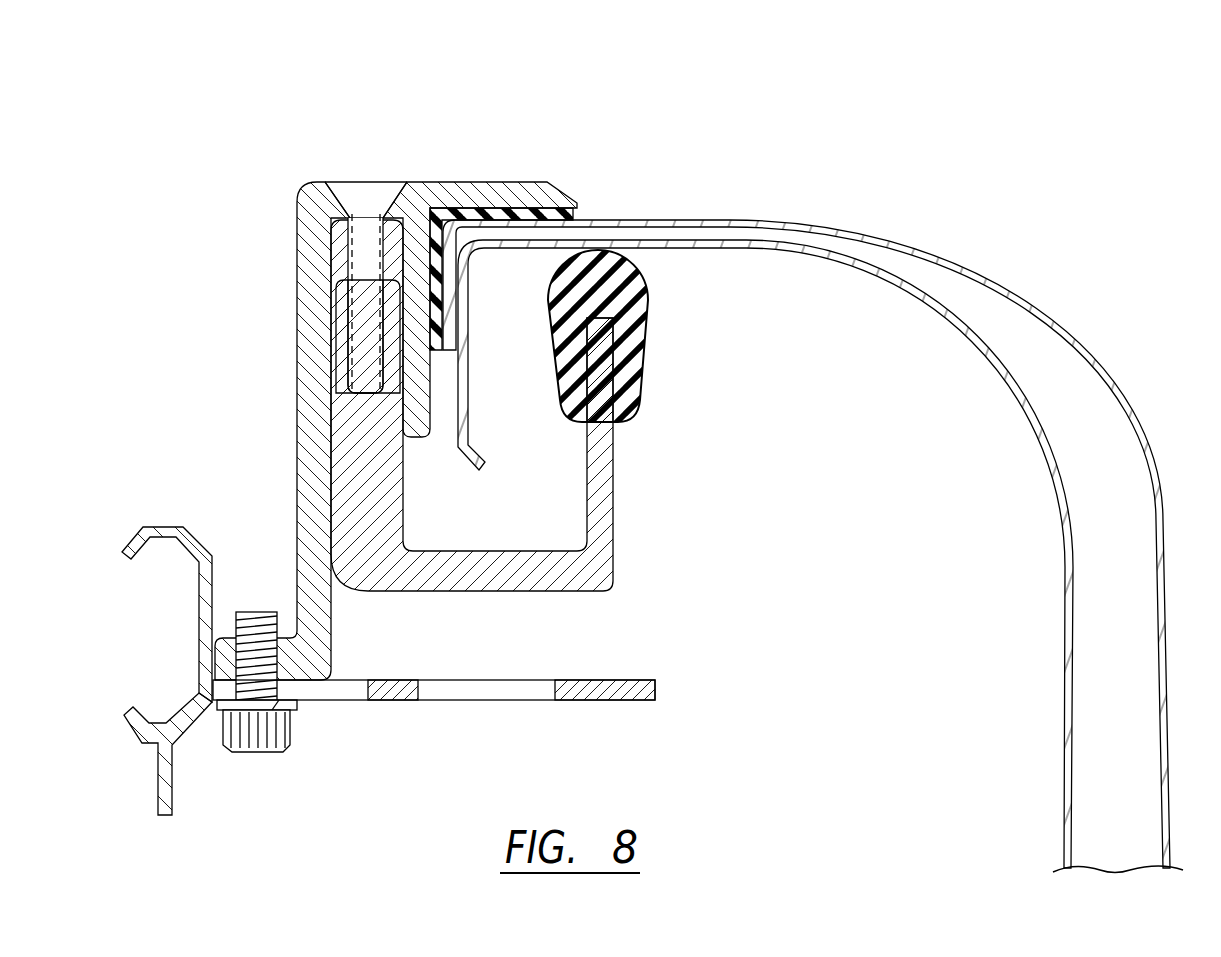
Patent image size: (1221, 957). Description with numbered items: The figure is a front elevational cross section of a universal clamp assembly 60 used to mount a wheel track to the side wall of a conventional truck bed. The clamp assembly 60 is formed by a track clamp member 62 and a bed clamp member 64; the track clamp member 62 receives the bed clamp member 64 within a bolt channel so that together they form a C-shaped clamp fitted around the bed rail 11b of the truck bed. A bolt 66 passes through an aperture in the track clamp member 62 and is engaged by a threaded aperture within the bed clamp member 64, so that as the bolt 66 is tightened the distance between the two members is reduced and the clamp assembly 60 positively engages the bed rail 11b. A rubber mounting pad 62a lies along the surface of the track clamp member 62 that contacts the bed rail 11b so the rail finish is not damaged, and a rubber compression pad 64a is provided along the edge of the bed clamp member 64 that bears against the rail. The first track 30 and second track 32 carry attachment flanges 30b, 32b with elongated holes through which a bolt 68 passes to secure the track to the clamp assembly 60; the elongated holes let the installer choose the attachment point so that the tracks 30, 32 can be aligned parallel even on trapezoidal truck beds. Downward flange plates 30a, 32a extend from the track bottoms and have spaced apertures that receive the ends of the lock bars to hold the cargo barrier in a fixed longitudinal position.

The clamp assembly 60 is at (228, 190).
The track clamp member 62 is at (300, 397).
The rubber mounting pad 62a is at (577, 212).
The bed clamp member 64 is at (587, 568).
The rubber compression pad 64a is at (648, 316).
The bolt 66 is at (365, 193).
The bolt 68 is at (293, 730).
The bed rail 11b is at (1108, 380).
The first wheel track 30 is at (136, 588).
The second wheel track 32 is at (170, 528).
The flange plate 30a is at (200, 777).
The flange plate 32a is at (167, 798).
The attachment flange 30b is at (434, 717).
The attachment flange 32b is at (617, 697).